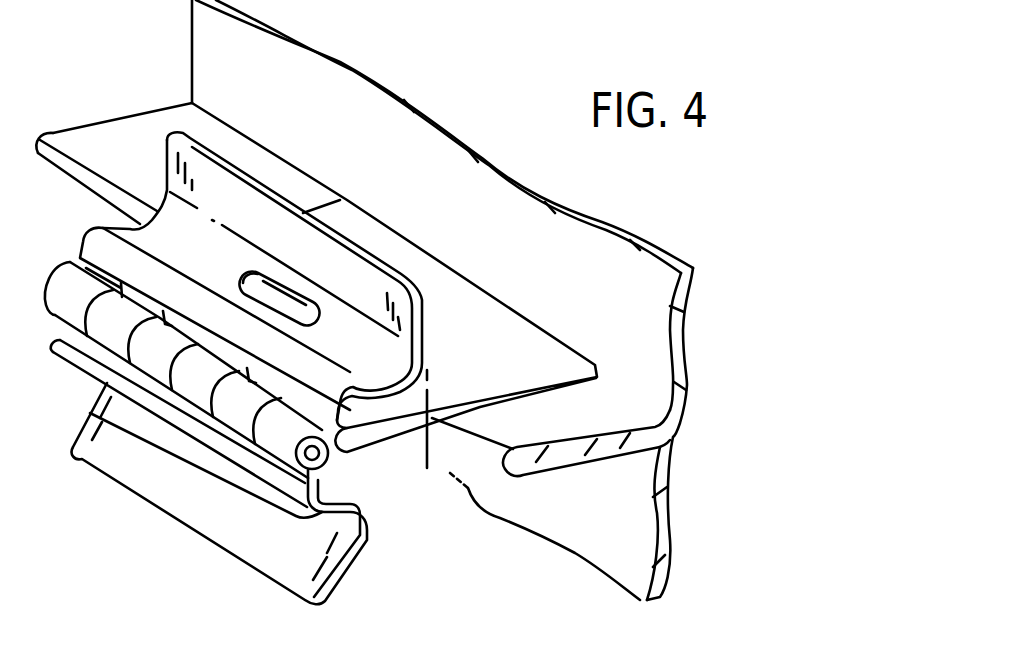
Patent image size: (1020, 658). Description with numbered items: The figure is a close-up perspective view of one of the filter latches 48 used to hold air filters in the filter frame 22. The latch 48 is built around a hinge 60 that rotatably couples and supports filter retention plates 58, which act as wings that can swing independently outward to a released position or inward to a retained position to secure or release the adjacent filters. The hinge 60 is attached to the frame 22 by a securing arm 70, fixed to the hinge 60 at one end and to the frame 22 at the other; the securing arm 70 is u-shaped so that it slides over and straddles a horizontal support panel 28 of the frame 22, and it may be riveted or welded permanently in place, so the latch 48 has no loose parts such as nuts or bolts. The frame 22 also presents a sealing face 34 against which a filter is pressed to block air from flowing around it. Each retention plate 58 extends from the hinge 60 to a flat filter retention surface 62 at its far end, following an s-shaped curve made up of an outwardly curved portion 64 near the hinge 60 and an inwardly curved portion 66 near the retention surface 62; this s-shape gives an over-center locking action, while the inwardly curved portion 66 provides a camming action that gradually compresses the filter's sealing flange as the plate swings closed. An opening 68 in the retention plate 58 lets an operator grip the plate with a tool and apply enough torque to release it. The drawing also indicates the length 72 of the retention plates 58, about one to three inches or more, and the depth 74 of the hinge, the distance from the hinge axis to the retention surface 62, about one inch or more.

The filter frame 22 is at (657, 277).
The horizontal support panel 28 is at (510, 430).
The sealing face 34 is at (607, 257).
The filter latch 48 is at (101, 532).
The filter retention plate 58 is at (190, 134).
The hinge 60 is at (58, 285).
The filter retention surface 62 is at (428, 327).
The outwardly curved portion 64 is at (97, 235).
The inwardly curved portion 66 is at (157, 213).
The opening 68 is at (254, 278).
The securing arm 70 is at (512, 337).
The length 72 is at (317, 613).
The depth 74 is at (425, 459).